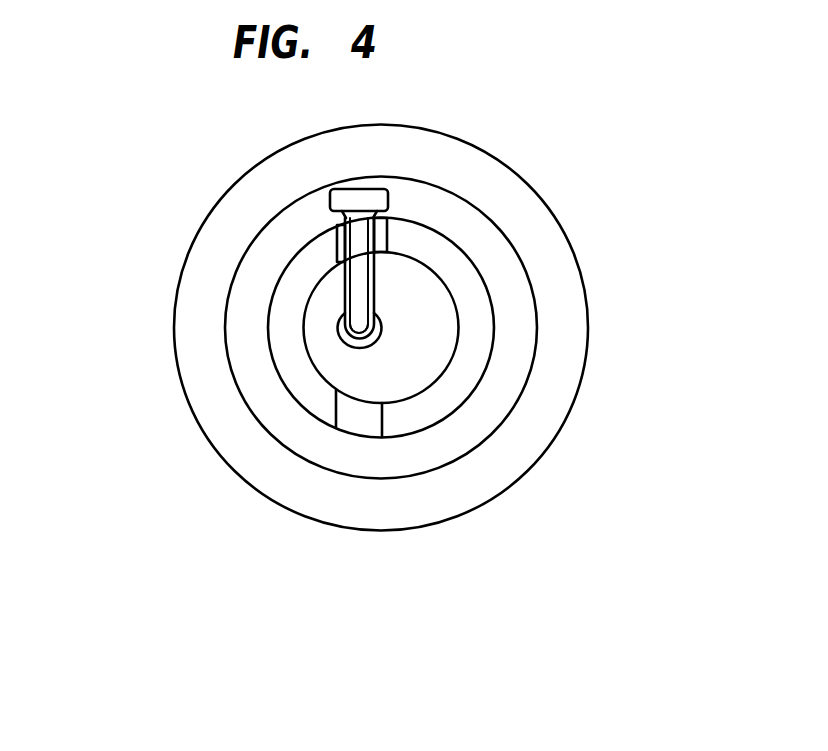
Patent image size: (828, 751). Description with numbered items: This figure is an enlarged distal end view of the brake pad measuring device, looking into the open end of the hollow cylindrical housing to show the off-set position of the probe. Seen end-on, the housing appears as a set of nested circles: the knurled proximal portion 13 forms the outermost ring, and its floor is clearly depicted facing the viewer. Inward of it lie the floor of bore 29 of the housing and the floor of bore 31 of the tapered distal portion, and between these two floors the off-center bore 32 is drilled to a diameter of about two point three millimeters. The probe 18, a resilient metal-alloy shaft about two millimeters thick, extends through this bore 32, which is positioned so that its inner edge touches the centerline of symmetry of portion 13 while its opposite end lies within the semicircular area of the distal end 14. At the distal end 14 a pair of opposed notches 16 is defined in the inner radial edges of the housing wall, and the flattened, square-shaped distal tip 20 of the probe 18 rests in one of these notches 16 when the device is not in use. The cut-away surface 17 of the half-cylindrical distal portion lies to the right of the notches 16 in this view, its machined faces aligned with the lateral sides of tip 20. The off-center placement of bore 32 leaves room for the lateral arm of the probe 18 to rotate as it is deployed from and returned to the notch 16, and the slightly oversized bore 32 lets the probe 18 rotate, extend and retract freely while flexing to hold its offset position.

The proximal portion 13 is at (418, 328).
The distal end 14 is at (297, 383).
The notches 16 is at (385, 228).
The cut-away surface 17 is at (454, 328).
The probe 18 is at (353, 327).
The distal tip of probe 20 is at (357, 221).
The bore 29 is at (407, 408).
The bore 31 is at (381, 437).
The off-center bore 32 is at (501, 259).